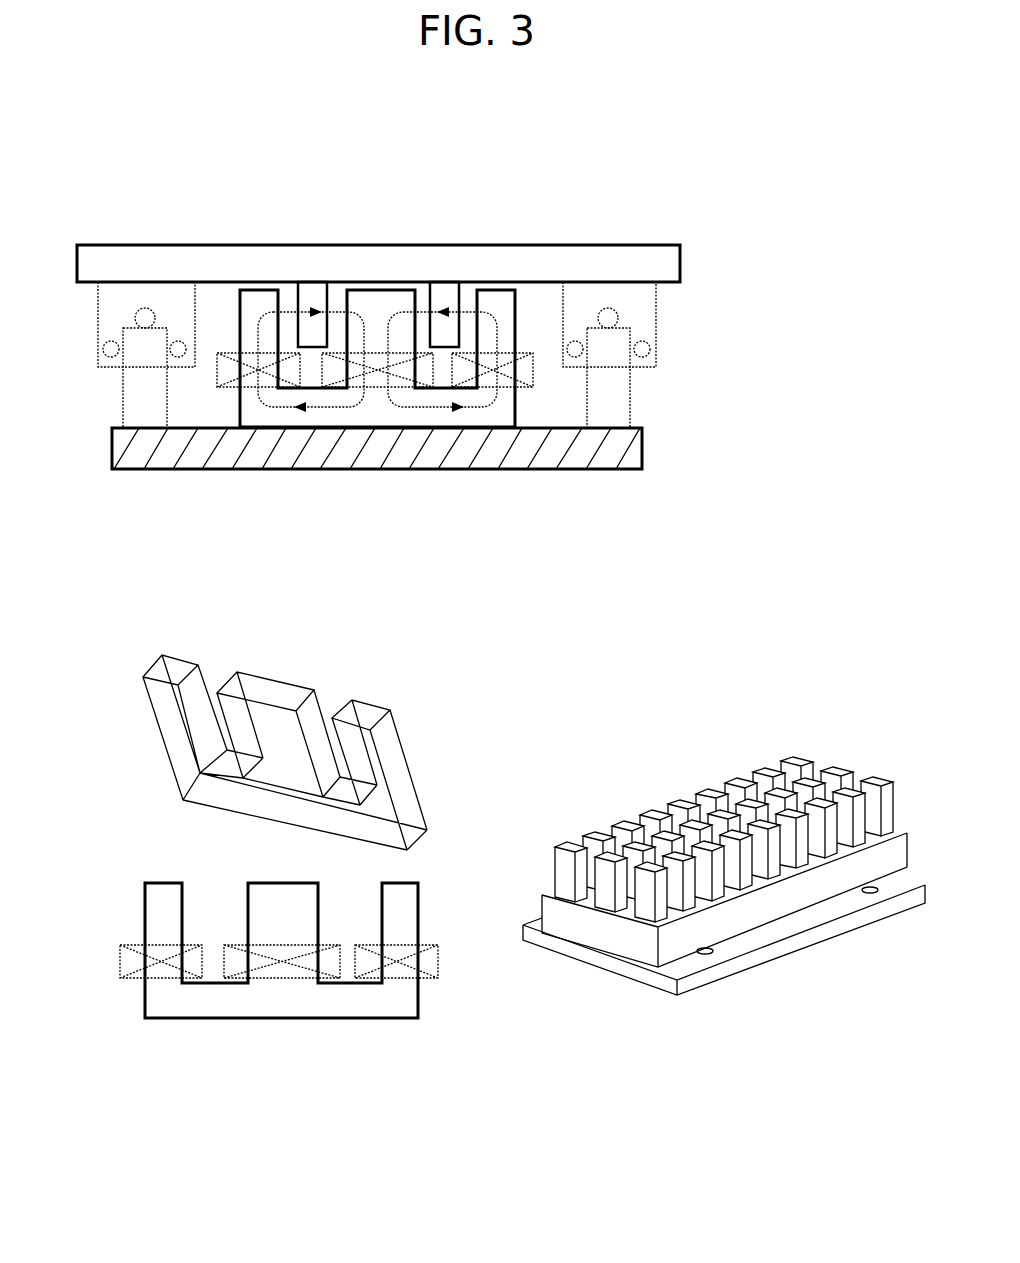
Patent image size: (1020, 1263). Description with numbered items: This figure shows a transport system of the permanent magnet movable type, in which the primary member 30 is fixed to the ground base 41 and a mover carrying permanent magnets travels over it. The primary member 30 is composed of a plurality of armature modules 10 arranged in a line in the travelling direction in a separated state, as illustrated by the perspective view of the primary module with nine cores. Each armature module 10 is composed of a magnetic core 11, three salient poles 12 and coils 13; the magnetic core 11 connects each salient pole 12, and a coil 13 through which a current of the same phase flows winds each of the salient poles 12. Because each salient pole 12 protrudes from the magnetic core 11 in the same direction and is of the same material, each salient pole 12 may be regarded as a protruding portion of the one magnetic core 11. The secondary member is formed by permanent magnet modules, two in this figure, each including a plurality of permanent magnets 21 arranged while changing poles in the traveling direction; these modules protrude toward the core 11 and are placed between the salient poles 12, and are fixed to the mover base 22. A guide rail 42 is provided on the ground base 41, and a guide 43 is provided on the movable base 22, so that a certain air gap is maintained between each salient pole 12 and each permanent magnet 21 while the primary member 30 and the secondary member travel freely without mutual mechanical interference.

The armature module 10 is at (165, 995).
The magnetic core 11 is at (258, 413).
The salient pole 12 is at (250, 303).
The coil 13 is at (383, 366).
The permanent magnet 21 is at (310, 305).
The mover base 22 is at (495, 263).
The primary member 30 is at (823, 880).
The ground base 41 is at (522, 450).
The guide rail 42 is at (620, 368).
The guide 43 is at (627, 297).